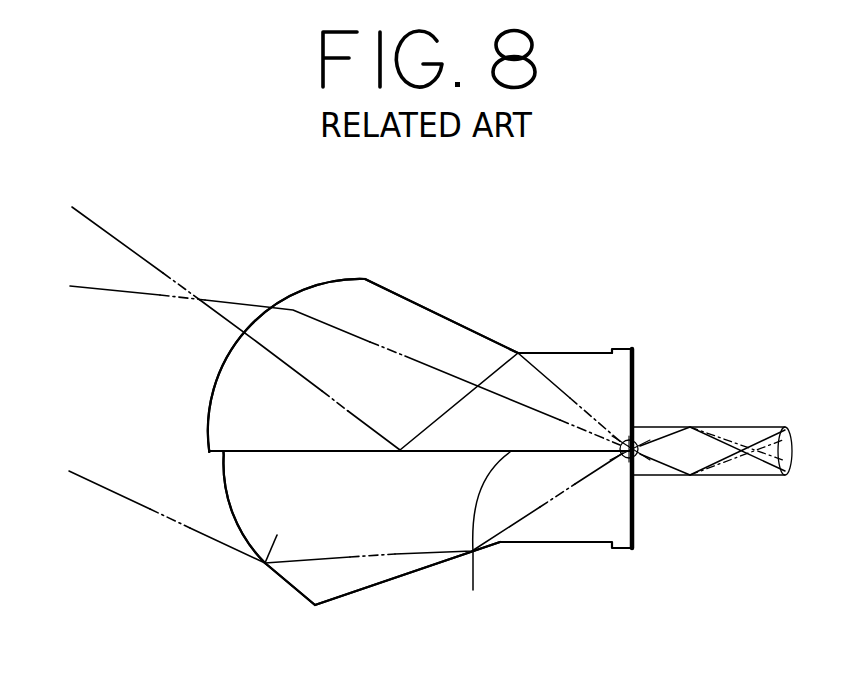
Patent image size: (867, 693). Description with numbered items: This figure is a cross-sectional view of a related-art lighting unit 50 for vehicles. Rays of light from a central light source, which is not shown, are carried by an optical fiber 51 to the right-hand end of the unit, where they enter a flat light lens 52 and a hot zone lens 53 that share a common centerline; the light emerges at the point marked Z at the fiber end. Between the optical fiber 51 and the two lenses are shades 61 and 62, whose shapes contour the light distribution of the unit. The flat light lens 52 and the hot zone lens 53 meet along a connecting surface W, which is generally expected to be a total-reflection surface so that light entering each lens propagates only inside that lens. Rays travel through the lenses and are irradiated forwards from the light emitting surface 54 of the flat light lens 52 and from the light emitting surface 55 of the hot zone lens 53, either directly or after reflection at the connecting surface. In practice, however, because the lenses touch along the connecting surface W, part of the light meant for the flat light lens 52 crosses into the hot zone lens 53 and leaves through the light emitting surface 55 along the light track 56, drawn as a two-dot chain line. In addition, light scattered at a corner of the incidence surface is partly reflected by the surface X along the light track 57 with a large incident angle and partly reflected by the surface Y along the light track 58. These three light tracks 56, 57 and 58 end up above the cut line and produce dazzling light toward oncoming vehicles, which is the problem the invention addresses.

The lighting unit 50 is at (551, 582).
The optical fiber 51 is at (742, 430).
The flat light lens 52 is at (263, 568).
The hot zone lens 53 is at (375, 303).
The light emitting surface 54 is at (226, 484).
The light emitting surface 55 is at (216, 401).
The light track 56 is at (85, 285).
The light track 57 is at (82, 218).
The light track 58 is at (84, 475).
The shade 61 is at (635, 366).
The shade 62 is at (636, 506).
The surface X is at (552, 353).
The surface Y is at (397, 578).
The light emitting point Z is at (641, 439).
The connecting surface W is at (485, 538).